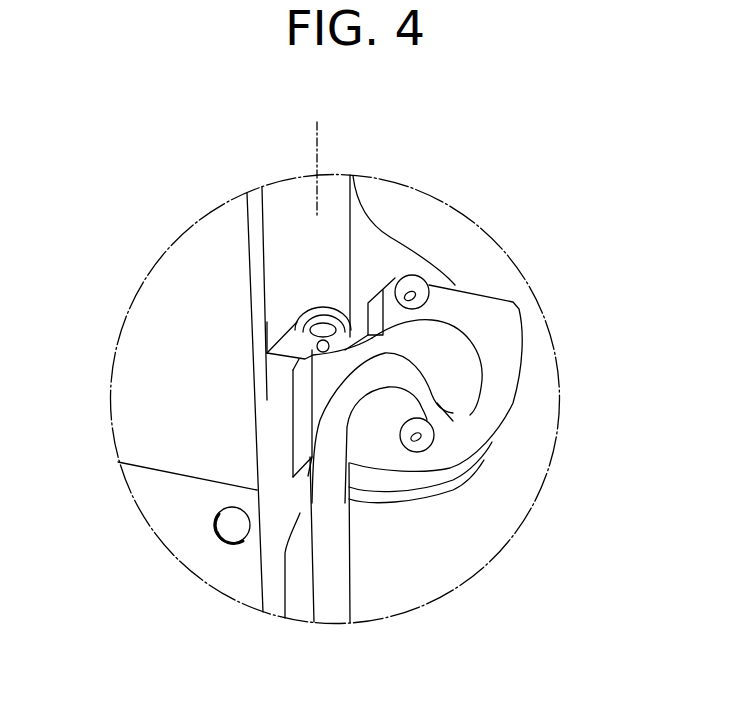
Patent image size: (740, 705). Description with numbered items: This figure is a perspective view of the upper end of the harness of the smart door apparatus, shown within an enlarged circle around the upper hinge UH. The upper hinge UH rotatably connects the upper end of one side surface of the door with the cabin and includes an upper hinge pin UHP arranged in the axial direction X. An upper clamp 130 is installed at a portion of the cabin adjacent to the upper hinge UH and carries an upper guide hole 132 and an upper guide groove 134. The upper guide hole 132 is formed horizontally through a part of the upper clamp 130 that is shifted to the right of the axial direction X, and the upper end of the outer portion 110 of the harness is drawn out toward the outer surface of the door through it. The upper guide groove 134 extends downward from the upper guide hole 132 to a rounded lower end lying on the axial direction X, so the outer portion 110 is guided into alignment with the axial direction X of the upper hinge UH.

The outer portion 110 is at (329, 606).
The upper clamp 130 is at (510, 337).
The upper guide hole 132 is at (437, 407).
The upper guide groove 134 is at (322, 398).
The upper hinge UH is at (284, 262).
The upper hinge pin UHP is at (300, 322).
The axial direction X is at (316, 158).